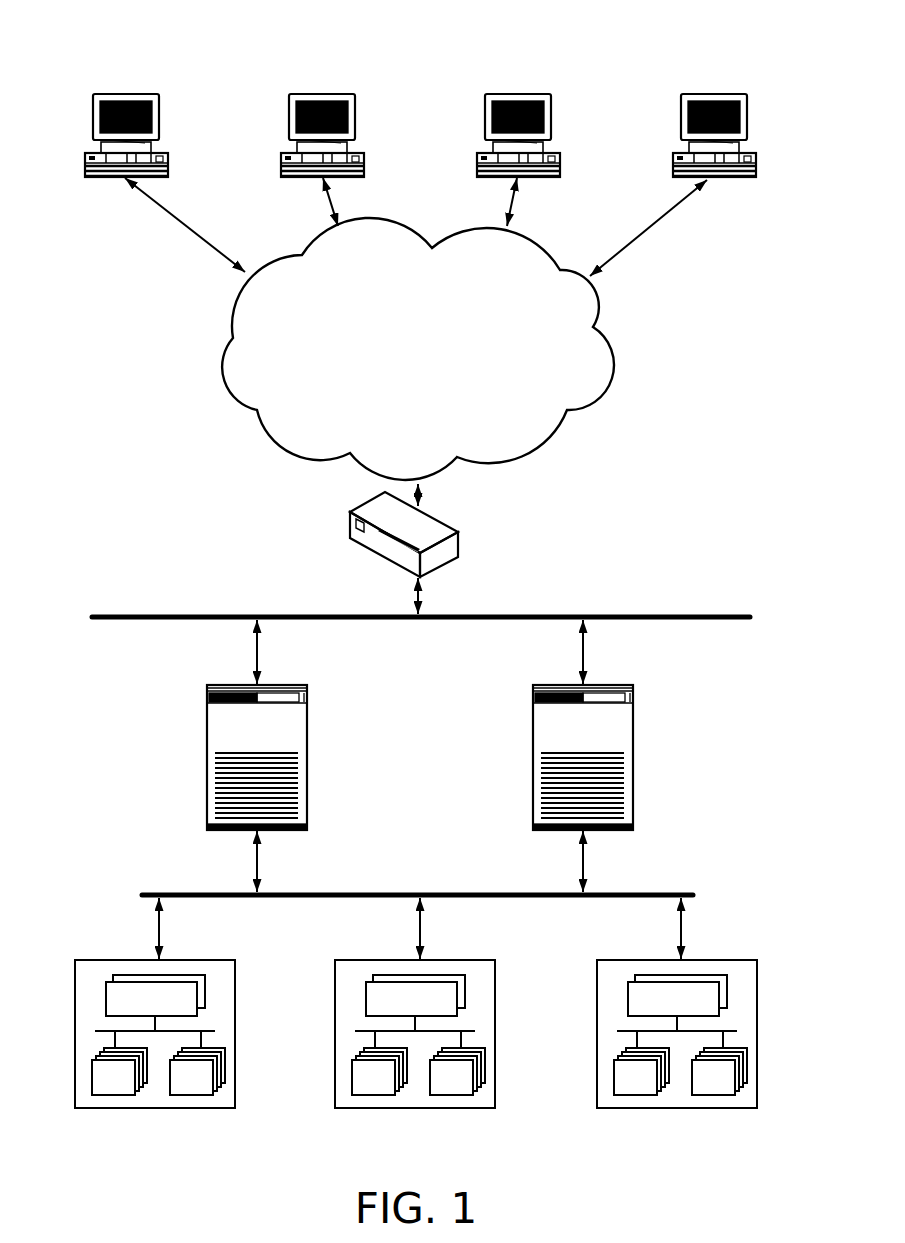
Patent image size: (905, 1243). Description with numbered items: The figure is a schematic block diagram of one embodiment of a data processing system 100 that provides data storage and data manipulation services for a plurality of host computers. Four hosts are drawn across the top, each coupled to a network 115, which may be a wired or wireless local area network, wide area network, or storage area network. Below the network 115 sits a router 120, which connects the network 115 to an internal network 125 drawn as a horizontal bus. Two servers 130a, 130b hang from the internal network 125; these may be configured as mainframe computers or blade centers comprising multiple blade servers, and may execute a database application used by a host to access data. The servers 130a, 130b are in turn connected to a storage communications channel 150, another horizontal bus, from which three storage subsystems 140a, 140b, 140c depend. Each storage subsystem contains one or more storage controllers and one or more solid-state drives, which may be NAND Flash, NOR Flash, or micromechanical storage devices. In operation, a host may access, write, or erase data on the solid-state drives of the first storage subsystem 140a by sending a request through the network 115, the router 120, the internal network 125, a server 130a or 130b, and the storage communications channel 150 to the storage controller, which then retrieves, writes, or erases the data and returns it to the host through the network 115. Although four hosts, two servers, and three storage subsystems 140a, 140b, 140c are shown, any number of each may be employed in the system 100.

The data processing system 100 is at (75, 60).
The network 115 is at (428, 372).
The router 120 is at (458, 532).
The internal network 125 is at (112, 616).
The server 130a is at (307, 685).
The server 130b is at (632, 685).
The first storage subsystem 140a is at (165, 1026).
The storage subsystem 140b is at (425, 1026).
The storage subsystem 140c is at (687, 1026).
The storage communications channel 150 is at (350, 893).